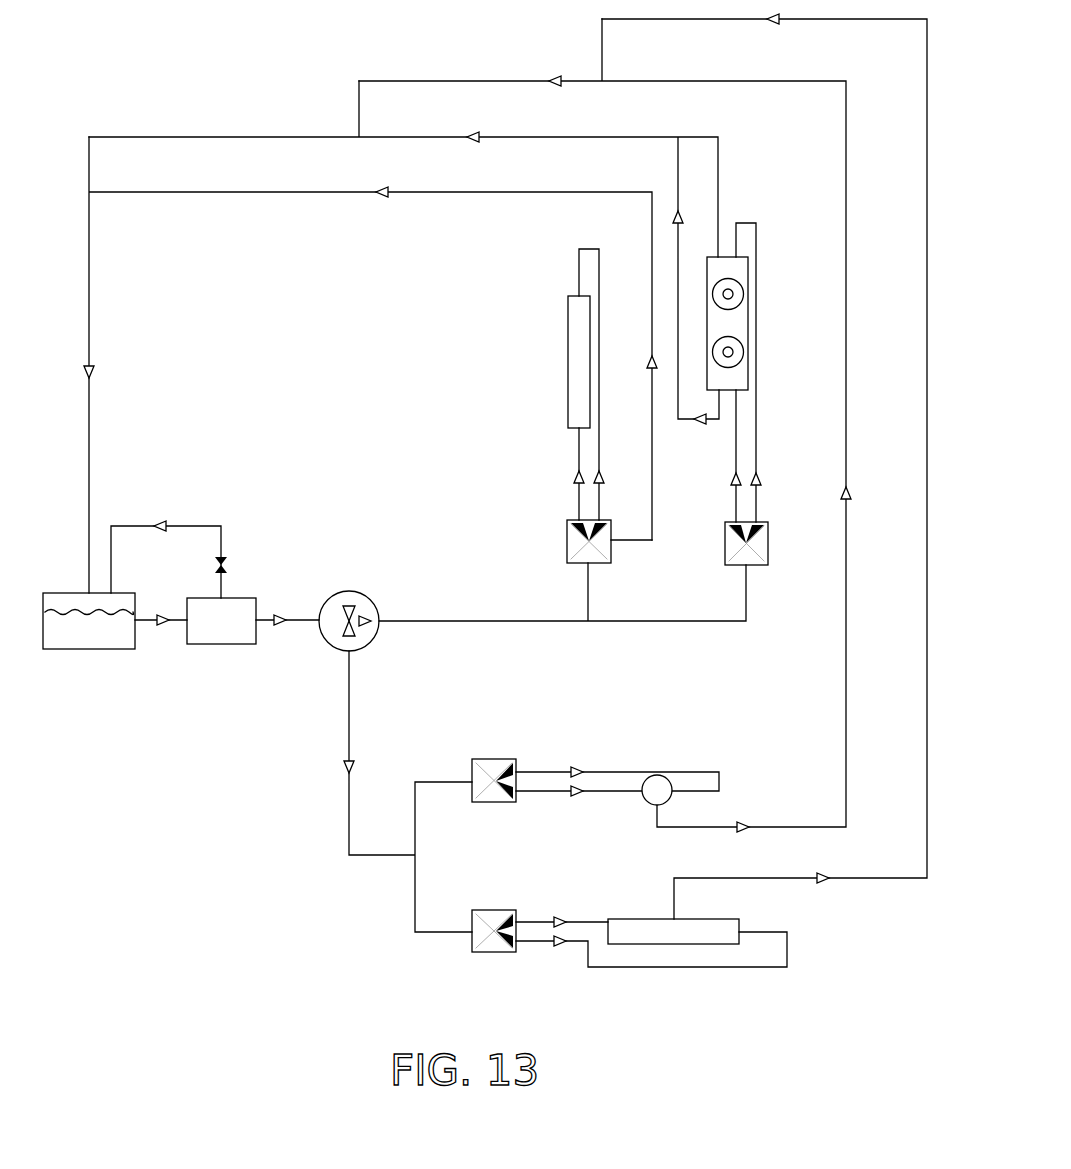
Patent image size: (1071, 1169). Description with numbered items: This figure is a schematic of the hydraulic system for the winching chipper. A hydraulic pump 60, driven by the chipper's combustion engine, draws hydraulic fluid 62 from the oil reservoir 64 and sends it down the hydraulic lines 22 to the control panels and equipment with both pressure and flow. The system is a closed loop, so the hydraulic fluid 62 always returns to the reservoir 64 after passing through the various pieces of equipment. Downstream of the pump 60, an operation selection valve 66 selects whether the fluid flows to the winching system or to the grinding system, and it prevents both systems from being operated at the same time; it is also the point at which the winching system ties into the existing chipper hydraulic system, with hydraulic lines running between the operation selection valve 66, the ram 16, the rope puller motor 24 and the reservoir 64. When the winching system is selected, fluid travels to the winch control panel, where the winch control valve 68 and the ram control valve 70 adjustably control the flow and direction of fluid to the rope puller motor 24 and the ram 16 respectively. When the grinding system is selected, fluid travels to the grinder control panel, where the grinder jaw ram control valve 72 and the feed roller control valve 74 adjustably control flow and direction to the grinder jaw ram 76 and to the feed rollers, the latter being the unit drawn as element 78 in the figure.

The ram 16 is at (718, 919).
The hydraulic lines 22 is at (463, 621).
The rope puller motor 24 is at (657, 787).
The hydraulic pump 60 is at (222, 644).
The hydraulic fluid 62 is at (113, 633).
The oil reservoir 64 is at (57, 649).
The operation selection valve 66 is at (360, 591).
The winch control valve 68 is at (495, 759).
The ram control valve 70 is at (493, 910).
The grinder jaw ram control valve 72 is at (567, 542).
The feed roller control valve 74 is at (768, 545).
The grinder jaw ram 76 is at (567, 327).
The hydraulic cylinder 78 is at (736, 328).